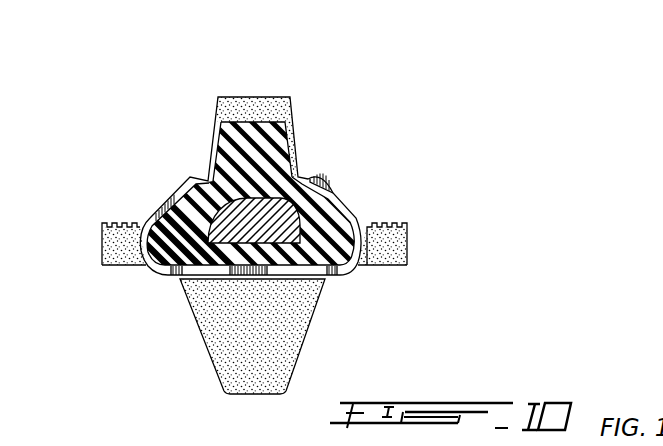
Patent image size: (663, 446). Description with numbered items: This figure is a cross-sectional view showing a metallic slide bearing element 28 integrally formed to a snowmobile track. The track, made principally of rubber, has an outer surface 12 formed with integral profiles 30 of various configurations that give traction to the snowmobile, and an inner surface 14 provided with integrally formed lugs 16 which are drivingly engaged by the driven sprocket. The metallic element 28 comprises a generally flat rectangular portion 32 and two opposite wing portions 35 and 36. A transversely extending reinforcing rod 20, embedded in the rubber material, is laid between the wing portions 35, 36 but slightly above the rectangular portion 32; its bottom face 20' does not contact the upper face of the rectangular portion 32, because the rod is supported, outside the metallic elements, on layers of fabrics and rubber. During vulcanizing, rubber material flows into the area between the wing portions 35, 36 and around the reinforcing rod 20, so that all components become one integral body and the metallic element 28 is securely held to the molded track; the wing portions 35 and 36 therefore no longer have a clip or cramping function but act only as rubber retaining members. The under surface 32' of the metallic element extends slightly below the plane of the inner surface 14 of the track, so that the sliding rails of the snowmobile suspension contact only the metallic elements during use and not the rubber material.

The outer surface 12 is at (403, 215).
The inner surface 14 is at (397, 271).
The lugs 16 is at (262, 345).
The reinforcing rods 20 is at (239, 167).
The bottom face 20' is at (321, 306).
The slide bearing element 28 is at (331, 165).
The integral profiles 30 is at (300, 92).
The rectangular portion 32 is at (146, 300).
The under surface 32' is at (229, 330).
The wing portion 35 is at (336, 191).
The wing portion 36 is at (158, 207).